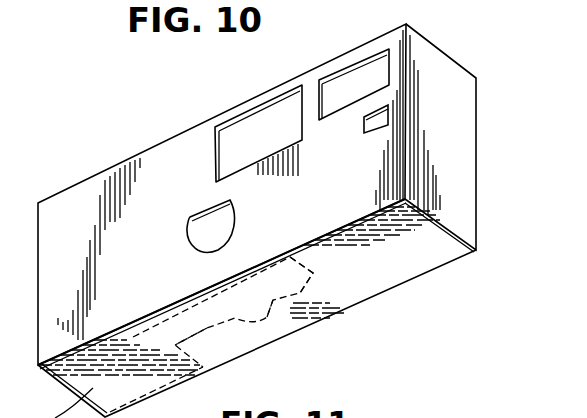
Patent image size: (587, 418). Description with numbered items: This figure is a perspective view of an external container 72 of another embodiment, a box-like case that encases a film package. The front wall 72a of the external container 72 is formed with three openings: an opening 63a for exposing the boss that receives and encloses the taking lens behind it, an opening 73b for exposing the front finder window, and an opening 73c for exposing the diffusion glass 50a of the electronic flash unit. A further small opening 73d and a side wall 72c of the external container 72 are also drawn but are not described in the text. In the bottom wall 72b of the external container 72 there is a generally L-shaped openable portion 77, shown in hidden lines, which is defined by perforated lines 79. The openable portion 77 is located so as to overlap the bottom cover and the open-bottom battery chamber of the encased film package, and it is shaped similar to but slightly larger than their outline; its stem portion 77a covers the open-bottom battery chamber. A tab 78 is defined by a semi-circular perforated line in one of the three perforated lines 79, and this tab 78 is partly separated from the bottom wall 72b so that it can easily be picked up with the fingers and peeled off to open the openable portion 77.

In FIG. 10, the external container 72 is at (134, 148).
In FIG. 10, the front wall 72a is at (97, 190).
In FIG. 10, the bottom wall 72b is at (375, 290).
In FIG. 10, the side wall of casing 72c is at (466, 170).
In FIG. 10, the opening 73b is at (258, 112).
In FIG. 10, the opening 73c is at (357, 72).
In FIG. 10, the small window opening 73d is at (381, 118).
In FIG. 10, the opening 63a is at (221, 225).
In FIG. 10, the openable portion 77 is at (143, 316).
In FIG. 10, the stem portion 77a is at (322, 272).
In FIG. 10, the tab 78 is at (267, 320).
In FIG. 10, the perforated lines 79 is at (207, 330).
In FIG. 11, the diffusion glass 50a is at (448, 409).